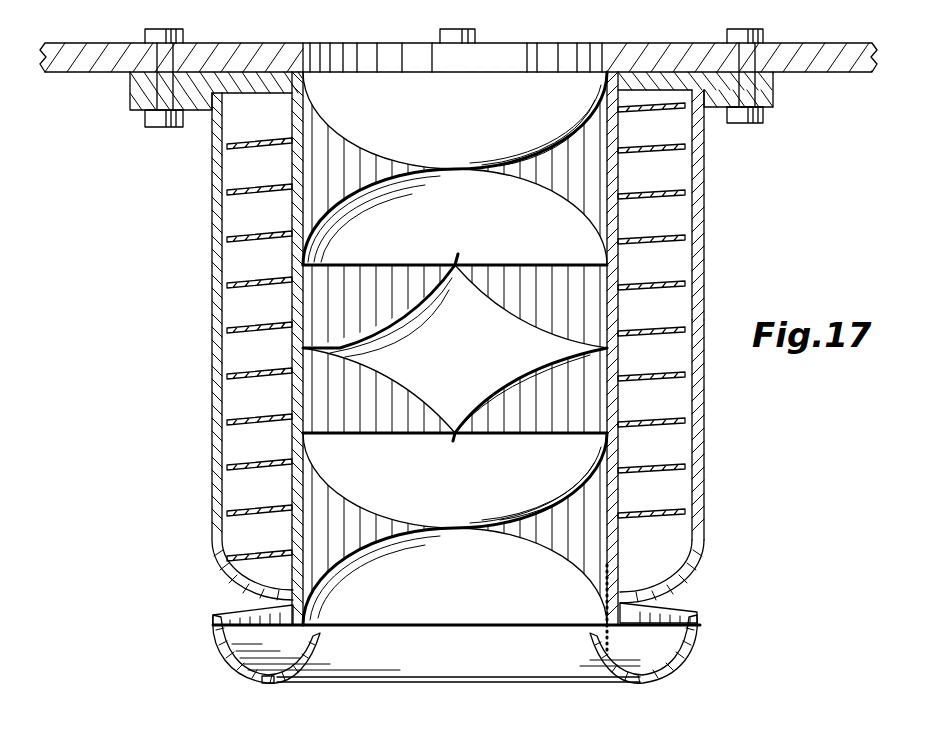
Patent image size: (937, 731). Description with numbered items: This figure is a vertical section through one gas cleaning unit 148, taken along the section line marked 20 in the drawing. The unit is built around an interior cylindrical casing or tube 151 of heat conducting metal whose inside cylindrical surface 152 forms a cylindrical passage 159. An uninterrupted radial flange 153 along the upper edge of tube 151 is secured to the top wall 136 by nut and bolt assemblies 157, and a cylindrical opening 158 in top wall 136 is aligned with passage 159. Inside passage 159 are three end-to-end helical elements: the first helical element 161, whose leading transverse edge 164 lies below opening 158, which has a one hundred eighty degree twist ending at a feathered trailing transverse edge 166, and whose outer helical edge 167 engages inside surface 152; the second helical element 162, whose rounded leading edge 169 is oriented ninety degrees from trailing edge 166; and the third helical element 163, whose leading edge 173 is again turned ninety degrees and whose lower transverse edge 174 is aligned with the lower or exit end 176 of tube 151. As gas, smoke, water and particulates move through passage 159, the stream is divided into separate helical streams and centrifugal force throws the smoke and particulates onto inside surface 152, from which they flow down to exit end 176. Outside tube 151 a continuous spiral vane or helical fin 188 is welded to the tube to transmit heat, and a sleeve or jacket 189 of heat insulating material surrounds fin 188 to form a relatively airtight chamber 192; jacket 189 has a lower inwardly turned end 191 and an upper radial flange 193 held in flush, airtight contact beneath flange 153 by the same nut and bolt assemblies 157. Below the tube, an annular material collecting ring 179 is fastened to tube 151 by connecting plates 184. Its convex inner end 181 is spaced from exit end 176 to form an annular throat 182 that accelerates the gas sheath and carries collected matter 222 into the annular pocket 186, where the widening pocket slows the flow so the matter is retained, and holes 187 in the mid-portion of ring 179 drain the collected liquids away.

The top wall 136 is at (652, 62).
The gas cleaning unit 148 is at (718, 287).
The interior cylindrical casing or tube 151 is at (628, 167).
The inside cylindrical surface 152 is at (608, 287).
The radial flange 153 is at (775, 80).
The nut and bolt assemblies 157 is at (185, 37).
The cylindrical hole or opening 158 is at (521, 56).
The cylindrical passage 159 is at (376, 349).
The first helical element 161 is at (455, 168).
The second helical element 162 is at (455, 349).
The third helical element 163 is at (455, 529).
The leading transverse edge 164 is at (368, 68).
The trailing transverse edge 166 is at (533, 263).
The outer helical edge 167 is at (538, 145).
The leading edge 169 is at (457, 258).
The leading edge 173 is at (548, 432).
The lower transverse edge 174 is at (484, 620).
The lower or exit end 176 is at (288, 619).
The annular member or material collecting ring 179 is at (249, 680).
The inner end 181 is at (327, 640).
The annular throat 182 is at (318, 626).
The connecting members or plates 184 is at (252, 612).
The annular pocket or recess 186 is at (613, 652).
The holes 187 is at (267, 684).
The continuous spiral vane or helical fin 188 is at (686, 190).
The sleeve or jacket 189 is at (705, 246).
The lower inwardly turned end 191 is at (673, 576).
The airtight chamber 192 is at (706, 393).
The radial flange 193 is at (766, 107).
The collected matter 222 is at (605, 603).
The section line 20 is at (152, 603).